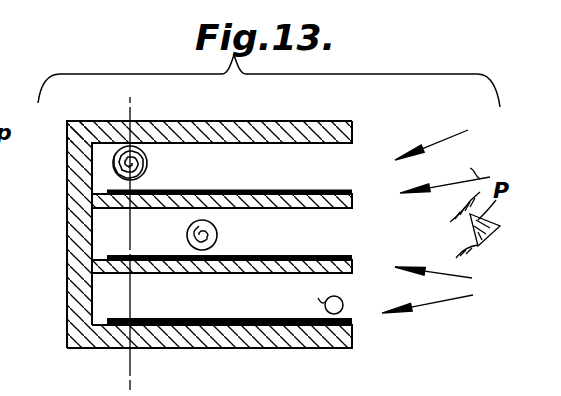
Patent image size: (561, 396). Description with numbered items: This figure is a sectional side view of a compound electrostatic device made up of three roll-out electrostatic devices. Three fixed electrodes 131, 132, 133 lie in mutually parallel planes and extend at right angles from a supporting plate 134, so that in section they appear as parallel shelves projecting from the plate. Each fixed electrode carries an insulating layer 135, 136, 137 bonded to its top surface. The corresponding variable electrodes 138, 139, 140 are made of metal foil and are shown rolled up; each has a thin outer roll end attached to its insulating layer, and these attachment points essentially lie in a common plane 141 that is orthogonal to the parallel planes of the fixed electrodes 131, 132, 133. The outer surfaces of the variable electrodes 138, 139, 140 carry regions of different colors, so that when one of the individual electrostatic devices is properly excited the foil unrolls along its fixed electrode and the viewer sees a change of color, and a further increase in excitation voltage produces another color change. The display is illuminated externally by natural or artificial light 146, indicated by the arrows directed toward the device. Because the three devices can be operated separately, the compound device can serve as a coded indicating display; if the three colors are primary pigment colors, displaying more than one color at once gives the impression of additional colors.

The fixed electrode 131 is at (312, 209).
The fixed electrode 132 is at (222, 263).
The fixed electrode 133 is at (200, 348).
The supporting plate 134 is at (77, 287).
The insulating layer 135 is at (258, 190).
The insulating layer 136 is at (150, 262).
The insulating layer 137 is at (280, 348).
The variable electrode 138 is at (147, 163).
The variable electrode 139 is at (216, 232).
The variable electrode 140 is at (311, 302).
The plane 141 is at (137, 105).
The light 146 is at (440, 139).